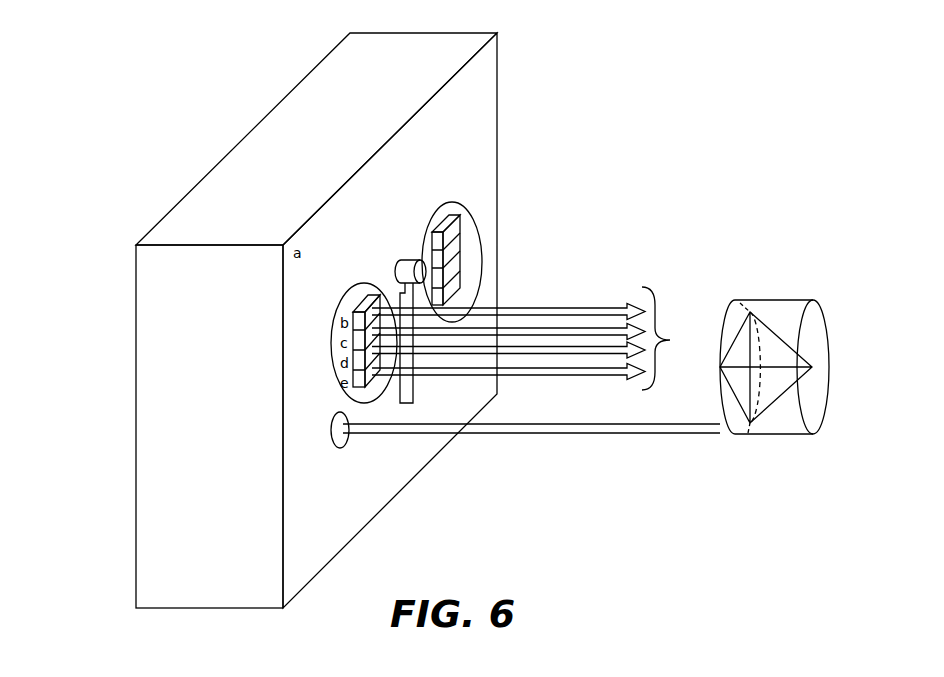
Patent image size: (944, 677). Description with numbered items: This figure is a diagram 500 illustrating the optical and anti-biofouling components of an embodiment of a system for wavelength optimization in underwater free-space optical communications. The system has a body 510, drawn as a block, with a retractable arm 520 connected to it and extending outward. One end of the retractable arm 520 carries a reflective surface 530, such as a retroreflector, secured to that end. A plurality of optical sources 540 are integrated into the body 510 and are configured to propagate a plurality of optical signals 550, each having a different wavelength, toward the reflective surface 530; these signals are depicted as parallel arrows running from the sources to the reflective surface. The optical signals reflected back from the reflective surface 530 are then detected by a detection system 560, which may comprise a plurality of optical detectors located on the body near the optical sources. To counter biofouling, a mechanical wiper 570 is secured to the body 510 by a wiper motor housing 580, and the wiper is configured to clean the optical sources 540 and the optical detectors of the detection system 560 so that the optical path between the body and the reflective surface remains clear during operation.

The diagram 500 is at (122, 70).
The body 510 is at (224, 180).
The retractable arm 520 is at (537, 434).
The reflective surface 530 is at (783, 312).
The optical sources 540 is at (175, 355).
The optical signals 550 is at (541, 338).
The detection system 560 is at (461, 217).
The mechanical wiper 570 is at (410, 396).
The wiper motor housing 580 is at (404, 262).